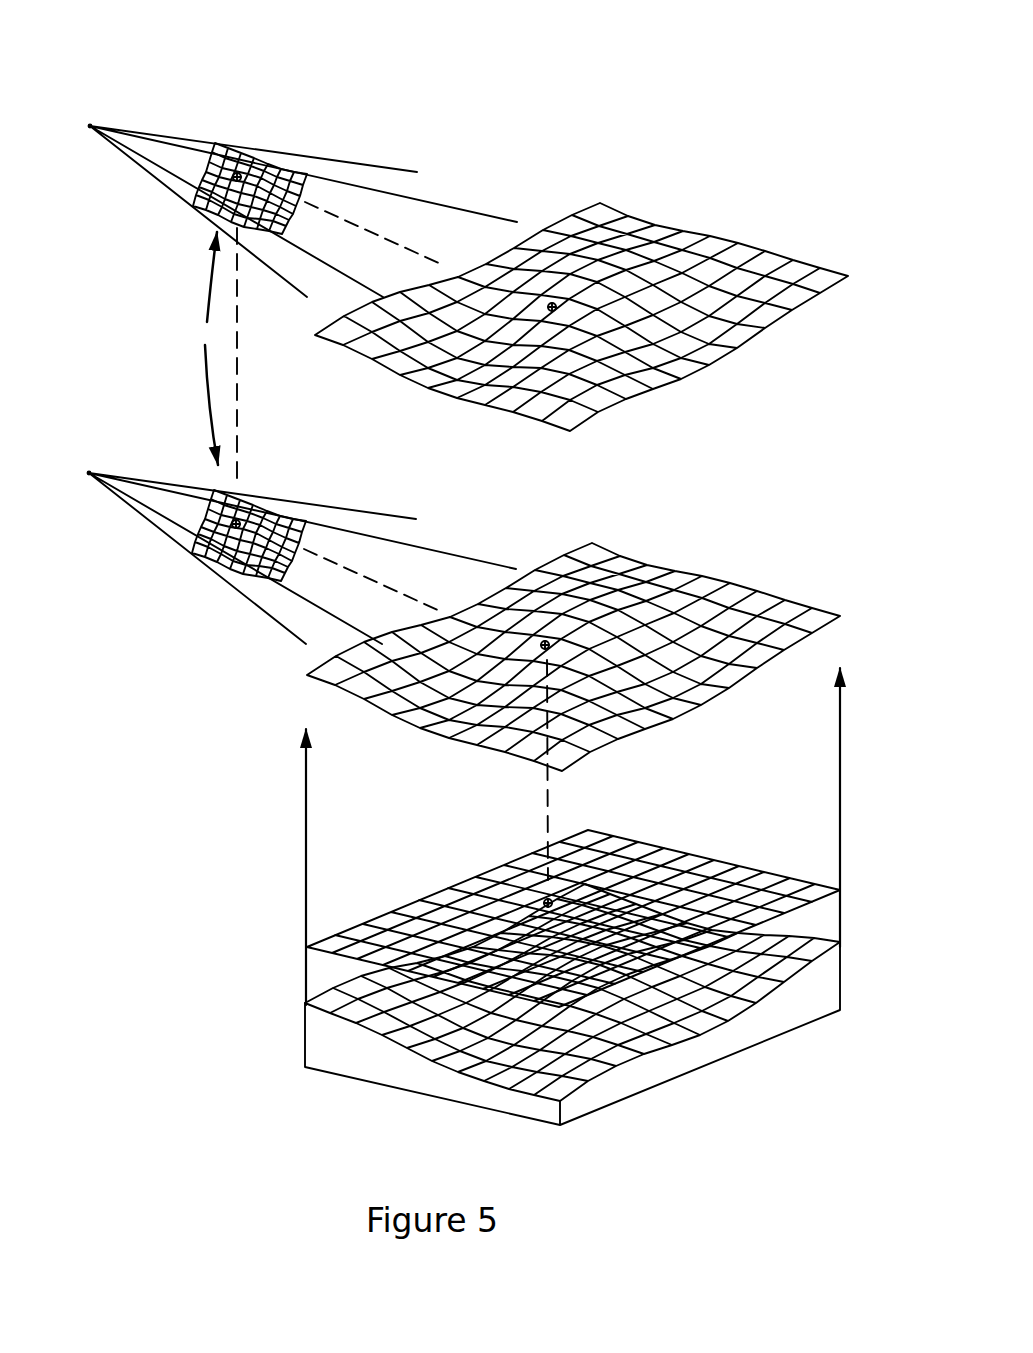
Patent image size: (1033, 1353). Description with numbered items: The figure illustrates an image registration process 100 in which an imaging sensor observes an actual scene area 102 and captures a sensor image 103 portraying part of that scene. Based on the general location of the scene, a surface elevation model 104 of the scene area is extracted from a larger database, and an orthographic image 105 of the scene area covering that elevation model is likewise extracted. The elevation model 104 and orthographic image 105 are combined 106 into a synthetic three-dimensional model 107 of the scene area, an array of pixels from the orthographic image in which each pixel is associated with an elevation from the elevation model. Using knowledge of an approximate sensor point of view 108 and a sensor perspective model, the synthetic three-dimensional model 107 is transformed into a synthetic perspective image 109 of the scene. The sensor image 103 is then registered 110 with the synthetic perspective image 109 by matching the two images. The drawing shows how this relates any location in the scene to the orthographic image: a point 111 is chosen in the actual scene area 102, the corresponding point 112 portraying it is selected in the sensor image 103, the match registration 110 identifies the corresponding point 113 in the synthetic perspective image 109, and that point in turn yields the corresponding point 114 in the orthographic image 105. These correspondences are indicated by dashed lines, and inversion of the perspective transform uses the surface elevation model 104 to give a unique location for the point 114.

The image registration process 100 is at (798, 42).
The actual scene area 102 is at (581, 333).
The sensor image of scene 103 is at (283, 162).
The surface elevation model 104 is at (473, 1027).
The orthographic image of scene area 105 is at (460, 921).
The combining of elevation model and orthographic image 106 is at (447, 836).
The synthetic 3-D model of scene area 107 is at (576, 639).
The approximate sensor point of view 108 is at (284, 513).
The synthetic perspective image of scene 109 is at (342, 513).
The match registration 110 is at (149, 354).
The point in scene 111 is at (559, 299).
The corresponding point in sensor image 112 is at (252, 172).
The corresponding point in synthetic perspective image 113 is at (226, 535).
The corresponding point in orthographic image 114 is at (538, 900).